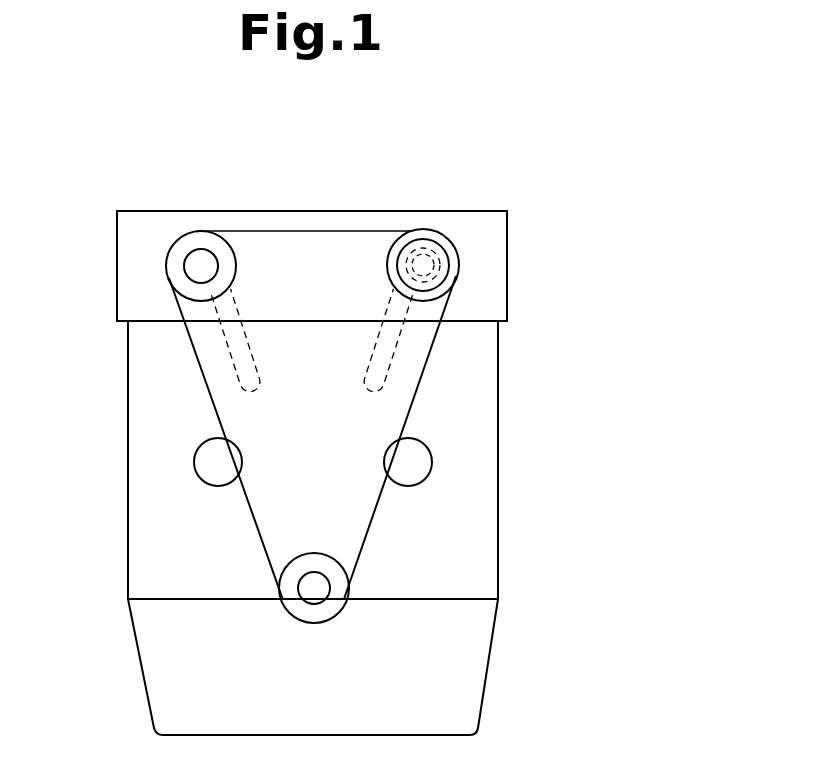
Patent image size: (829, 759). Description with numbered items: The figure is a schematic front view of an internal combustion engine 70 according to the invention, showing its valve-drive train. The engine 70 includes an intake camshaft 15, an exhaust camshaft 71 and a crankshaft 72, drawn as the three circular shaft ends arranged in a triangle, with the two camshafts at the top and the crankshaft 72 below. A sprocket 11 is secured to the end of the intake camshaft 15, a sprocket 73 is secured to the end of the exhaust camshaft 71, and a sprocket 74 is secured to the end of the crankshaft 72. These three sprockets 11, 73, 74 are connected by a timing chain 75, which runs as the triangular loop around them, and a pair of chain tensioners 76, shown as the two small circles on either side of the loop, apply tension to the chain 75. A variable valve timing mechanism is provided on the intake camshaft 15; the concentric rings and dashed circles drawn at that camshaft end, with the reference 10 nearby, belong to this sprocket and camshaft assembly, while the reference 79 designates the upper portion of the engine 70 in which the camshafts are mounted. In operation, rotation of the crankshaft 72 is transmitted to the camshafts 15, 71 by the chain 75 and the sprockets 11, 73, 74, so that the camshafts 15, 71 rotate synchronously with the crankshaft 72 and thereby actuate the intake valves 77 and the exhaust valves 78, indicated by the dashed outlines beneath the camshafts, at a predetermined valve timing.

The rotary shaft 10 is at (457, 265).
The sprocket 11 is at (450, 238).
The intake camshaft 15 is at (386, 252).
The engine 70 is at (117, 238).
The exhaust camshaft 71 is at (215, 265).
The crankshaft 72 is at (309, 598).
The sprocket 73 is at (183, 240).
The sprocket 74 is at (337, 620).
The timing chain 75 is at (418, 378).
The chain tensioners 76 is at (210, 485).
The intake valves 77 is at (386, 335).
The exhaust valves 78 is at (236, 340).
The mounting plate 79 is at (117, 289).